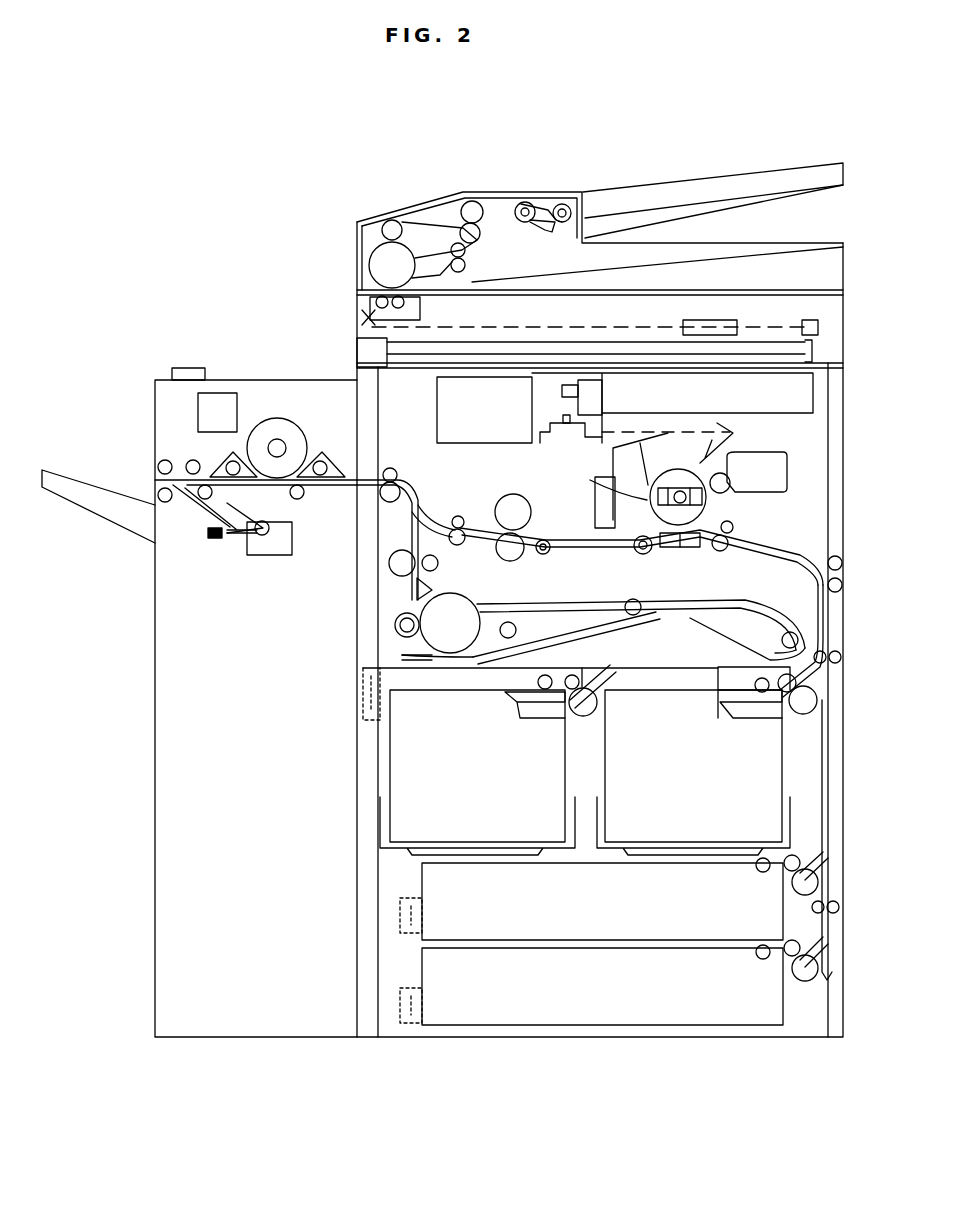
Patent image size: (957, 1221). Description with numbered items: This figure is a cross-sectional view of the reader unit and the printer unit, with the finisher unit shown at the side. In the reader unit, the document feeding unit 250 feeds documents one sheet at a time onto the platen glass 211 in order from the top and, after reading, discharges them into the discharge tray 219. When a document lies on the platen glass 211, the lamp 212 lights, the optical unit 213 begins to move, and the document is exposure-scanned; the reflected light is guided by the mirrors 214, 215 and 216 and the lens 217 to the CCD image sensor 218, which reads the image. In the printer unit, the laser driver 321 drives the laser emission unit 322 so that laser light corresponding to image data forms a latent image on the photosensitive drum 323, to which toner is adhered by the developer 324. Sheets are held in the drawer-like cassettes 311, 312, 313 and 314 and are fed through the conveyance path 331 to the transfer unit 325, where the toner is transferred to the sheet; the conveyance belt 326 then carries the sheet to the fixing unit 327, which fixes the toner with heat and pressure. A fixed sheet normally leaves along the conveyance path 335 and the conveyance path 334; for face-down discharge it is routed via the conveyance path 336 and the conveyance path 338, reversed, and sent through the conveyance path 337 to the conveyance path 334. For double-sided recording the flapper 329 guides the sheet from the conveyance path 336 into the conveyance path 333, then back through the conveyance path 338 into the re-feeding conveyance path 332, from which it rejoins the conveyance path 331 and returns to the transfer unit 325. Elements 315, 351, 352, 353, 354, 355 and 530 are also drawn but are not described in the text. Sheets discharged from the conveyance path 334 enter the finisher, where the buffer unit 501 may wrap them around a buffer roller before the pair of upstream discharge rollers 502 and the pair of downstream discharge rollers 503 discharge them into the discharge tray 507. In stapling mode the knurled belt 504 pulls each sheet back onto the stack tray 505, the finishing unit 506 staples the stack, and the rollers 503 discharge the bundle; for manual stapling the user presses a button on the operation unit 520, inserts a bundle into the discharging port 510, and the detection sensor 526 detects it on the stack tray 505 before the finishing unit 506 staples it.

The platen glass 211 is at (763, 291).
The lamp 212 is at (368, 272).
The optical unit 213 is at (420, 305).
The mirror 214 is at (424, 310).
The mirror 215 is at (378, 305).
The mirror 216 is at (372, 338).
The lens 217 is at (690, 320).
The CCD image sensor 218 is at (802, 322).
The discharge tray 219 is at (762, 242).
The document feeding unit 250 is at (602, 217).
The cassette 311 is at (780, 772).
The cassette 312 is at (390, 753).
The cassette 313 is at (422, 882).
The cassette 314 is at (422, 966).
The conveying path 315 is at (823, 580).
The laser driver 321 is at (433, 413).
The laser emission unit 322 is at (558, 442).
The photosensitive drum 323 is at (652, 503).
The developer 324 is at (772, 455).
The transfer unit 325 is at (700, 547).
The conveyance belt 326 is at (605, 545).
The fixing unit 327 is at (505, 500).
The flapper 329 is at (417, 580).
The conveyance path 331 is at (768, 552).
The re-feeding conveyance path 332 is at (550, 660).
The conveyance path 333 is at (530, 620).
The conveyance path 334 is at (365, 470).
The conveyance path 335 is at (422, 490).
The conveyance path 336 is at (445, 543).
The conveyance path 337 is at (402, 551).
The conveyance path 338 is at (407, 627).
The pickup roller 351 is at (795, 680).
The pickup roller 352 is at (565, 680).
The pickup roller 353 is at (800, 848).
The pickup roller 354 is at (800, 935).
The conveying rollers 355 is at (815, 572).
The buffer unit 501 is at (275, 418).
The pair of upstream discharge rollers 502 is at (193, 460).
The pair of downstream discharge rollers 503 is at (165, 460).
The knurled belt 504 is at (212, 492).
The stack tray 505 is at (203, 518).
The finishing unit 506 is at (268, 555).
The discharge tray 507 is at (86, 508).
The discharging port 510 is at (152, 483).
The operation unit 520 is at (172, 373).
The detection sensor 526 is at (216, 540).
The punch unit 530 is at (220, 392).